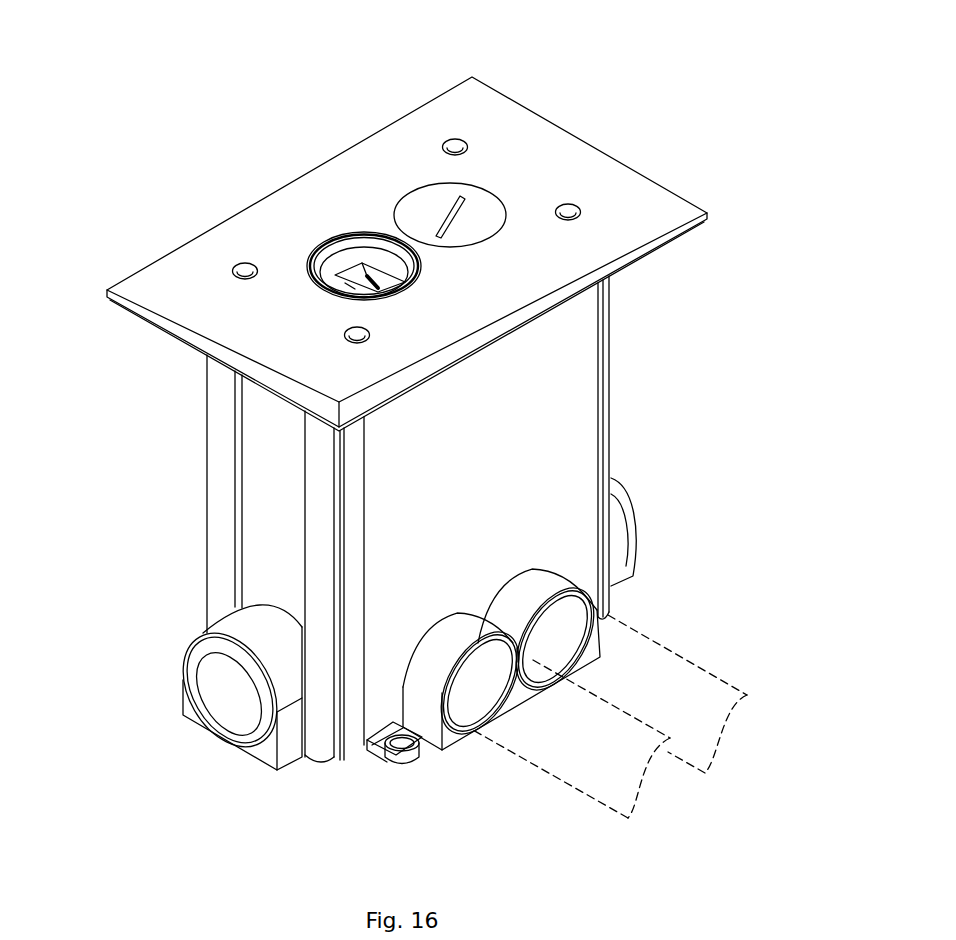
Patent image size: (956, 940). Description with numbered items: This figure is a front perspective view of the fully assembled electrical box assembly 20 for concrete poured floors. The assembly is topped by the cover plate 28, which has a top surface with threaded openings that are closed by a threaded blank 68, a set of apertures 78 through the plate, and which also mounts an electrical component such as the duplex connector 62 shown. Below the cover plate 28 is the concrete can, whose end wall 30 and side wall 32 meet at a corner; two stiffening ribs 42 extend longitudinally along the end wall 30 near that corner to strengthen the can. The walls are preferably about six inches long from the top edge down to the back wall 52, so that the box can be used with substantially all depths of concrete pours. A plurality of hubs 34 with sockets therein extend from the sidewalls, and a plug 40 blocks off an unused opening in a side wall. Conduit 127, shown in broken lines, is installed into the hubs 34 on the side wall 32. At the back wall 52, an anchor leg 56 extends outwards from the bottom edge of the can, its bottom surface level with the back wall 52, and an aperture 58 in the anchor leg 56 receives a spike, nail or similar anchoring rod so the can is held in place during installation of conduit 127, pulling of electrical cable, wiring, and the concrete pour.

The electrical box assembly 20 is at (140, 125).
The cover plate 28 is at (518, 104).
The mounting hole 78 is at (578, 210).
The threaded blank 68 is at (480, 202).
The duplex connector 62 is at (380, 293).
The stiffening rib 42 is at (207, 455).
The end wall 30 is at (257, 487).
The side wall 32 is at (463, 483).
The hub 34 is at (618, 488).
The plug 40 is at (195, 651).
The back wall 52 is at (330, 768).
The aperture 58 is at (369, 757).
The anchor leg 56 is at (405, 765).
The conduit 127 is at (685, 658).